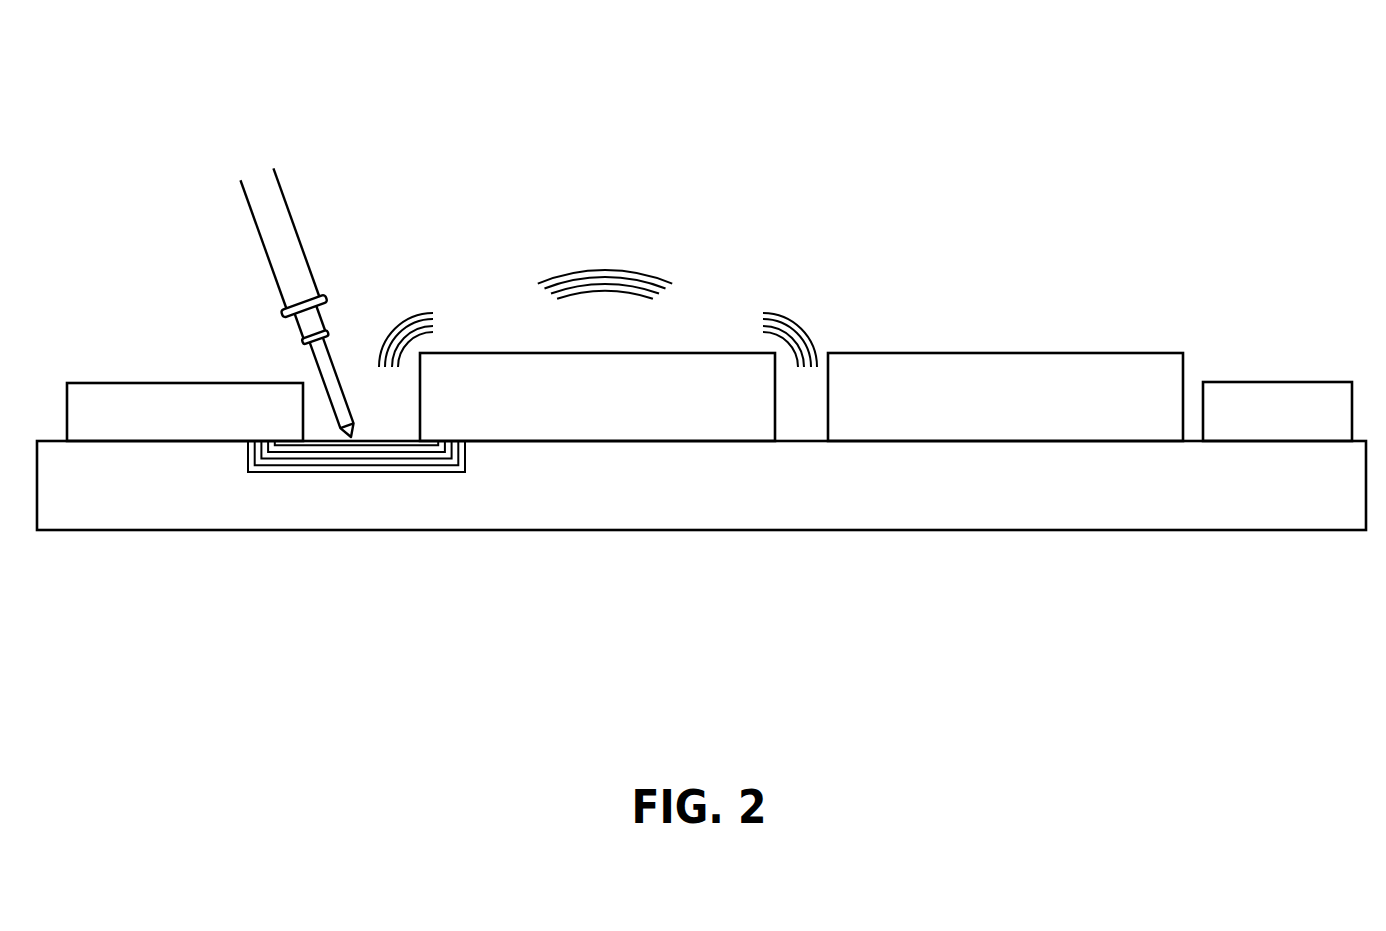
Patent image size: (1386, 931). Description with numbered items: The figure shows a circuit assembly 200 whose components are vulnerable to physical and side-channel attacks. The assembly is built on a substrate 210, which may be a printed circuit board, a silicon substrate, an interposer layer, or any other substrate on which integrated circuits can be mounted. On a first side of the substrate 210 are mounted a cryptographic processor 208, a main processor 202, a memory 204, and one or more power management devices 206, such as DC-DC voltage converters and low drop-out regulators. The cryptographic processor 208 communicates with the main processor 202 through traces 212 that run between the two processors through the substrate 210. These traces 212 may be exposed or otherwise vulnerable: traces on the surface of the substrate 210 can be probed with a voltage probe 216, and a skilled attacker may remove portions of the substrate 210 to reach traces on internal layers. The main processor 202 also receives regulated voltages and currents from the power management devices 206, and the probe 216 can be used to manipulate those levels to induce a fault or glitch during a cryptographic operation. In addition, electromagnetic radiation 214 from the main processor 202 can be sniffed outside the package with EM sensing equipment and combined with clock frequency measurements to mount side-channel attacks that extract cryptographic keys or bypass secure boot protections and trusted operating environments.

The circuit assembly 200 is at (1229, 126).
The main processor 202 is at (515, 353).
The memory 204 is at (1000, 353).
The power management devices 206 is at (1255, 382).
The cryptographic processor 208 is at (185, 383).
The substrate 210 is at (408, 531).
The traces 212 is at (315, 472).
The electromagnetic radiation 214 is at (610, 270).
The voltage probe 216 is at (326, 297).